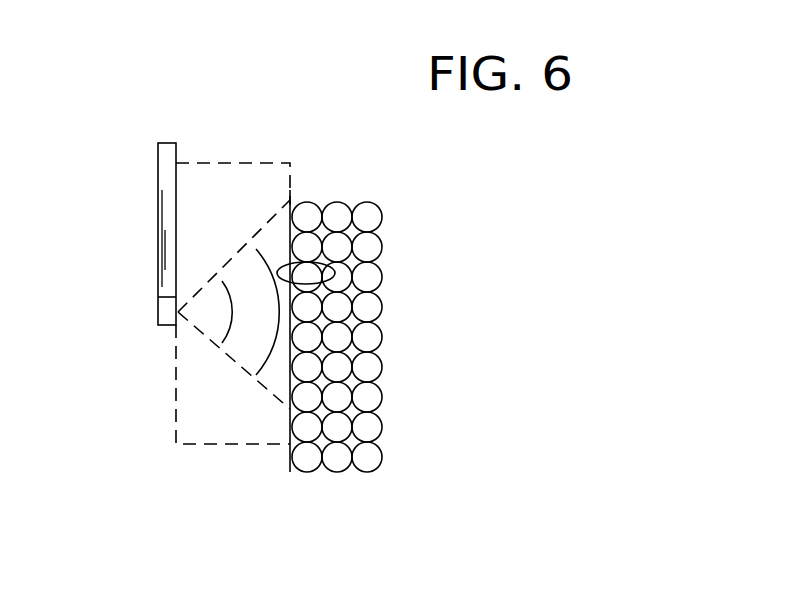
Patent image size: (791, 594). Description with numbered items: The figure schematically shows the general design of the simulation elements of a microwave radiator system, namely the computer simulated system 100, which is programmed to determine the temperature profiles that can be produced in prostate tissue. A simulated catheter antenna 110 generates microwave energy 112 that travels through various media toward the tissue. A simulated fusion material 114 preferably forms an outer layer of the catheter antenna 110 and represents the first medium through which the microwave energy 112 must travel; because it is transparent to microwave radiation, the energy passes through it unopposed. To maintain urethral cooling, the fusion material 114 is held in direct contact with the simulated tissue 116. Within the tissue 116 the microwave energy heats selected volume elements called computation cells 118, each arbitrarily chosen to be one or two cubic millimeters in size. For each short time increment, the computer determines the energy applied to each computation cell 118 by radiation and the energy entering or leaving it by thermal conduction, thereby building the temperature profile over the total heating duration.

The computer simulated system 100 is at (548, 442).
The simulated catheter antenna 110 is at (157, 245).
The microwave energy 112 is at (232, 357).
The simulated fusion material 114 is at (232, 445).
The simulated tissue 116 is at (335, 273).
The computation cells 118 is at (305, 338).